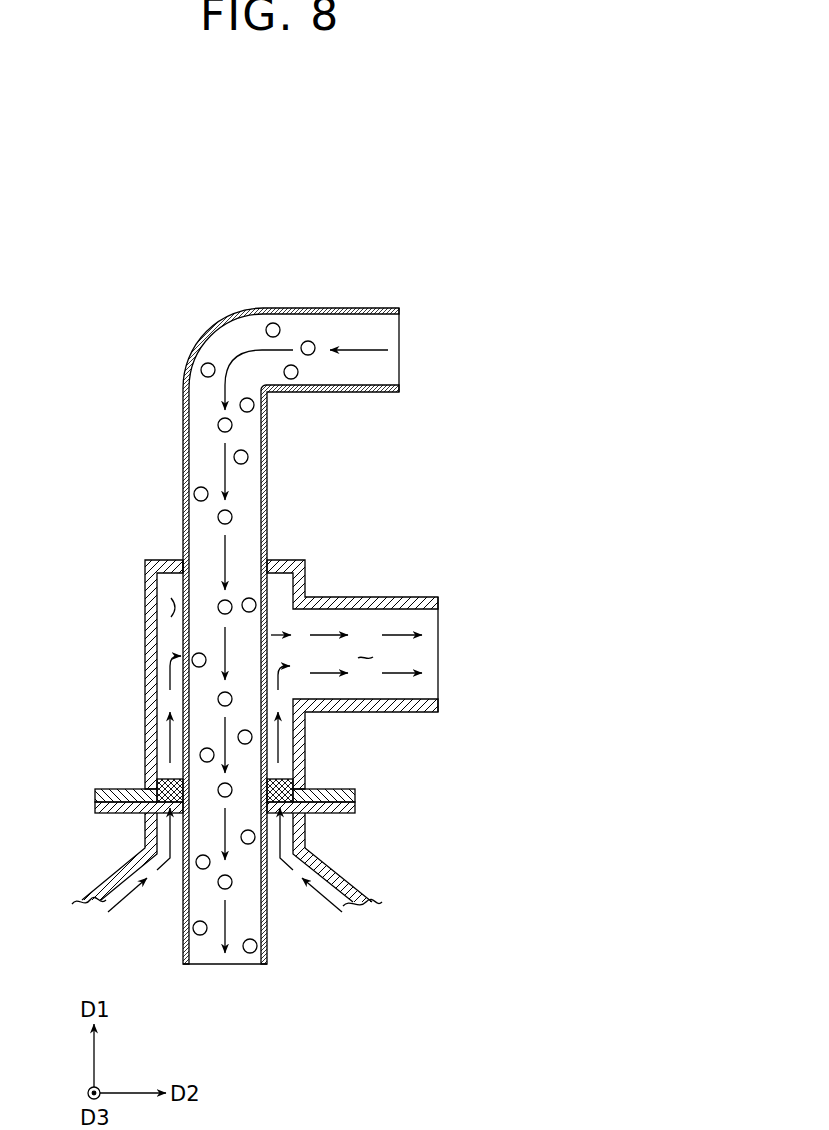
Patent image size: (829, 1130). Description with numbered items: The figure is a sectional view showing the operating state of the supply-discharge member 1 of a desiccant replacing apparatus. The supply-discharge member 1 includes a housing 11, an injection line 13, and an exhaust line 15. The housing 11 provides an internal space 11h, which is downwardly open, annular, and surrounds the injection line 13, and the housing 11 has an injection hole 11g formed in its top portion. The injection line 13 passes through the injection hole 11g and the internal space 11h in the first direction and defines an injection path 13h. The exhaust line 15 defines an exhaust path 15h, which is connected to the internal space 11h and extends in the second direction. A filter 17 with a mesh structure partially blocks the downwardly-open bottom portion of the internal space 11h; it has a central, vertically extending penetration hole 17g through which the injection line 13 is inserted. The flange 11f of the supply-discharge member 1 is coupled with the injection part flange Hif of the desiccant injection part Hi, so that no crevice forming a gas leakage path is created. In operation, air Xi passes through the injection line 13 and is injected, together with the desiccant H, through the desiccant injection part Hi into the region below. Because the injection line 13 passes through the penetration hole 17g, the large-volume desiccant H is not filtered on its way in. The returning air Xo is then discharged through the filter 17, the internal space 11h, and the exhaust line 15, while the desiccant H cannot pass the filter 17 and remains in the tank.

The supply-discharge member 1 is at (486, 213).
The housing 11 is at (150, 655).
The injection hole 11g is at (181, 558).
The internal space 11h is at (170, 607).
The flange 11f is at (97, 790).
The injection line 13 is at (310, 308).
The injection path 13h is at (342, 350).
The exhaust line 15 is at (332, 602).
The exhaust path 15h is at (366, 657).
The filter 17 is at (282, 792).
The penetration hole 17g is at (156, 787).
The desiccant H is at (194, 494).
The air Xi is at (225, 460).
The air Xo is at (280, 735).
The desiccant injection part Hi is at (368, 830).
The injection part flange Hif is at (99, 806).